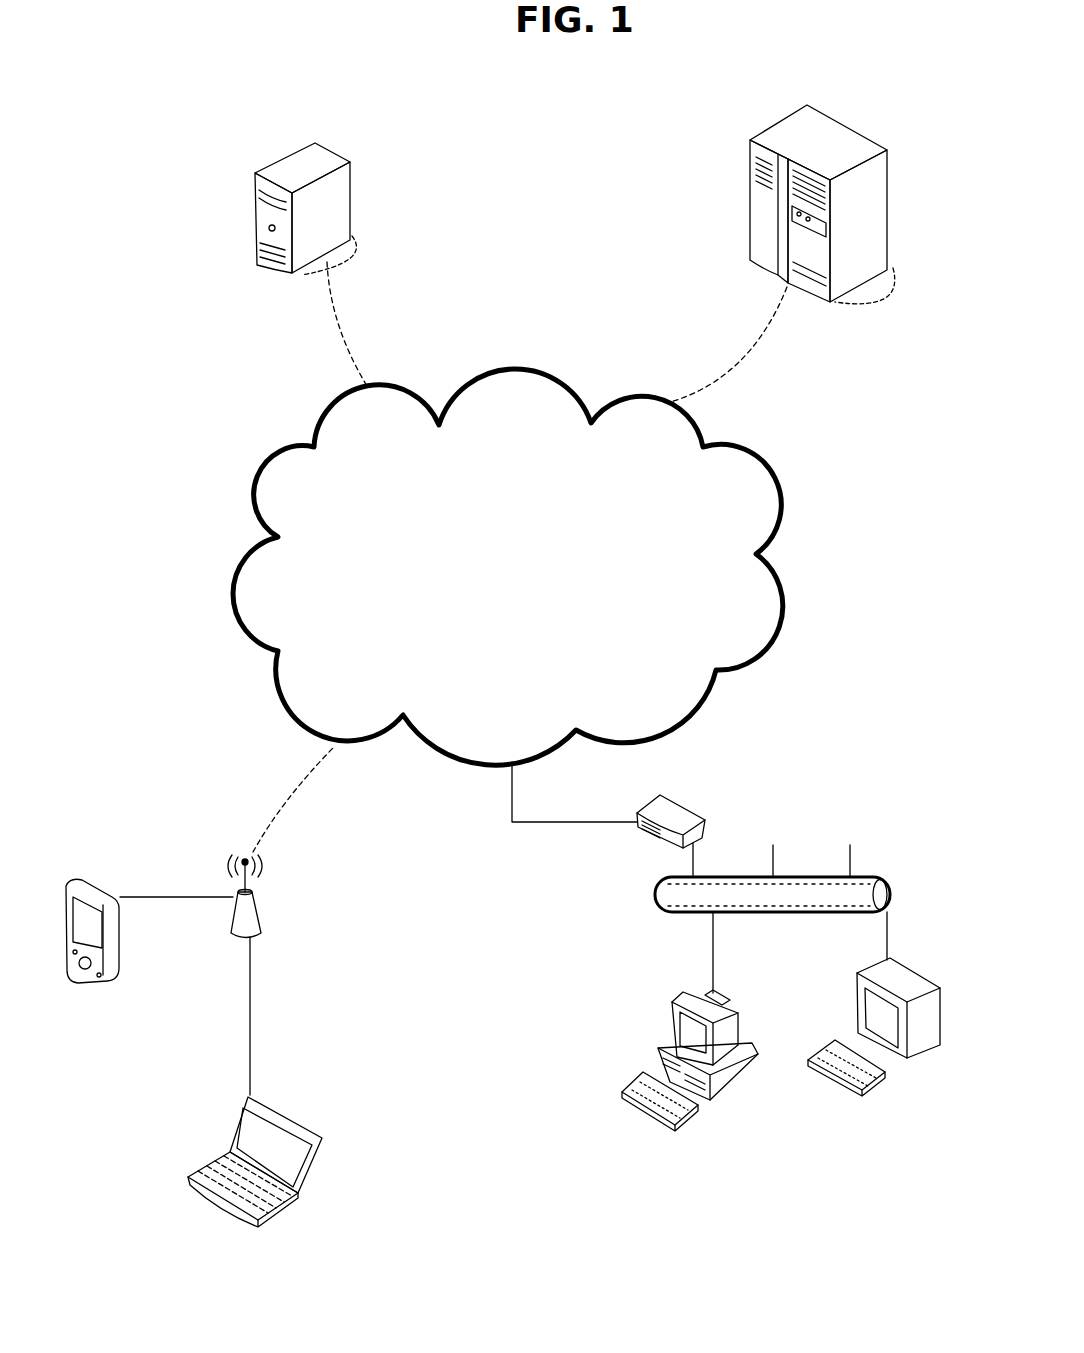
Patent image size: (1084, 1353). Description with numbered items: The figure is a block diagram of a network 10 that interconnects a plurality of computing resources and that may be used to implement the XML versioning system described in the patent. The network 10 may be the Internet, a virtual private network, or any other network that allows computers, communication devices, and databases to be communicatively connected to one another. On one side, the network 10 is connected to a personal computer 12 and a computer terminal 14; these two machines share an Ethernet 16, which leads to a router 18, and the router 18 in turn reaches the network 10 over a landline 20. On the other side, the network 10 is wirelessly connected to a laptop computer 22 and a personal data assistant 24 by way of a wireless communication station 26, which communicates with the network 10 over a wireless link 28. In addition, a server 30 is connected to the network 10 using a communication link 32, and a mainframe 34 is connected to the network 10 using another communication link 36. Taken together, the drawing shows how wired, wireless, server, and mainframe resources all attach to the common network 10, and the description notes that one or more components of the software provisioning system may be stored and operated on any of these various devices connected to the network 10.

The network 10 is at (508, 567).
The personal computer 12 is at (672, 997).
The computer terminal 14 is at (920, 975).
The Ethernet 16 is at (772, 878).
The router 18 is at (703, 819).
The landline 20 is at (567, 822).
The laptop computer 22 is at (303, 1197).
The personal data assistant 24 is at (98, 887).
The wireless communication station 26 is at (257, 917).
The wireless link 28 is at (293, 800).
The server 30 is at (350, 202).
The communication link 32 is at (365, 324).
The mainframe 34 is at (887, 268).
The communication link 36 is at (727, 345).